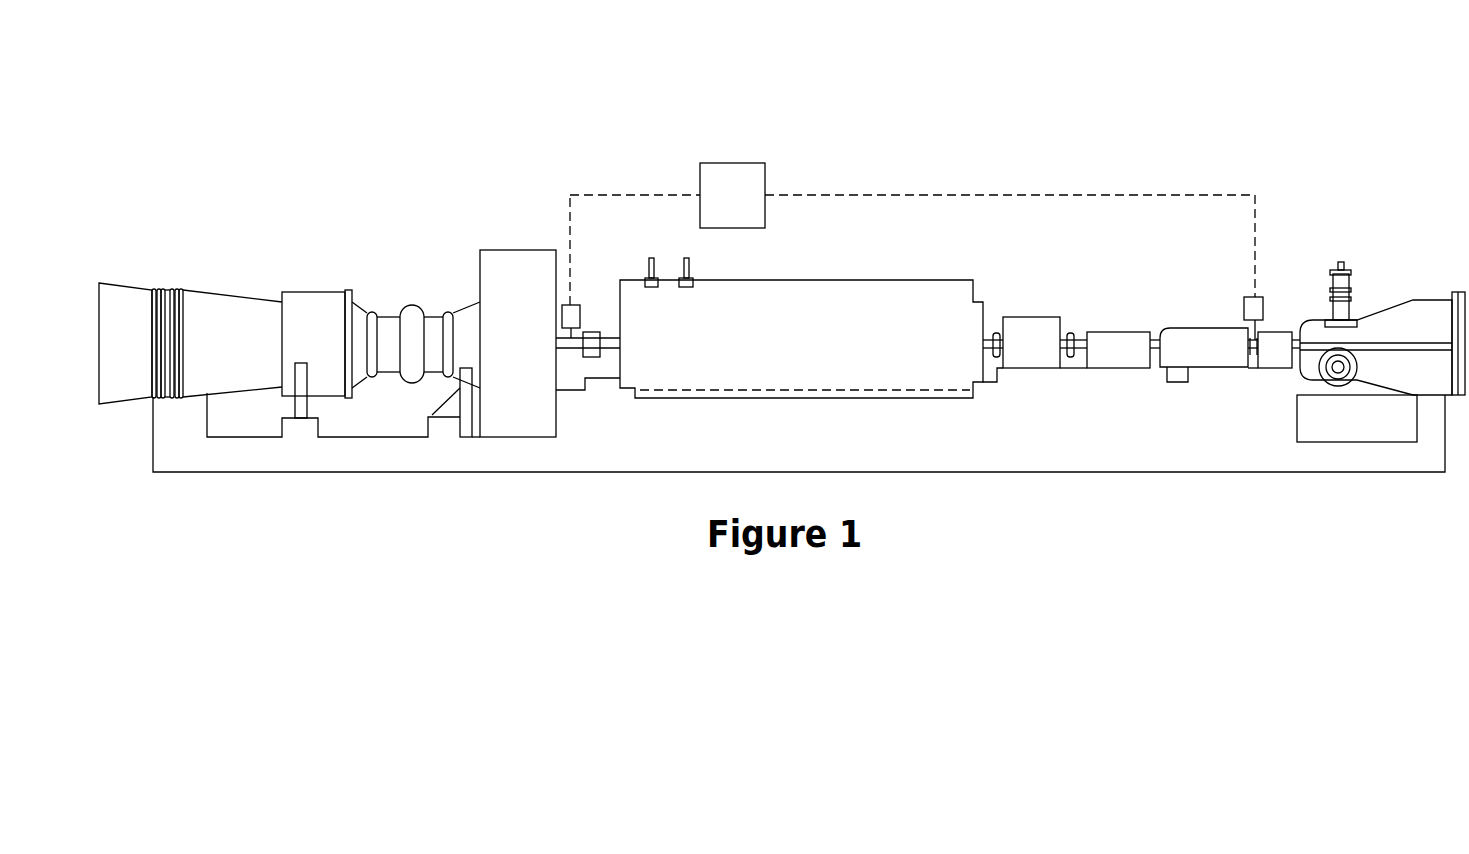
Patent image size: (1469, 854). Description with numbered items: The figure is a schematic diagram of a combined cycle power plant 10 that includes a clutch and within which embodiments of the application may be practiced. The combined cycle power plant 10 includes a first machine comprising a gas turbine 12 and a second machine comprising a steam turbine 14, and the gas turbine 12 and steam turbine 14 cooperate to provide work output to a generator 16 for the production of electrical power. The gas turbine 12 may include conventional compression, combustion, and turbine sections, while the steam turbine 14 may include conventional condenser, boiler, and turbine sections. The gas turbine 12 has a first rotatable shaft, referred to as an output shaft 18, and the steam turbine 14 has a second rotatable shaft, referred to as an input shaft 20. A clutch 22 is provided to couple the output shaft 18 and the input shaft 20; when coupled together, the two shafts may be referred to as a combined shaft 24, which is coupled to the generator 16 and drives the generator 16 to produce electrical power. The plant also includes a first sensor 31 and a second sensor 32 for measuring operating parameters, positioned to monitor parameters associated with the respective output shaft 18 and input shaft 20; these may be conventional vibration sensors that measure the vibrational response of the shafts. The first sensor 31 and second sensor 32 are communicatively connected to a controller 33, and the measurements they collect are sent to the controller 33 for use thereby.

The combined cycle power plant 10 is at (975, 78).
The gas turbine 12 is at (252, 278).
The steam turbine 14 is at (1398, 290).
The generator 16 is at (869, 268).
The output shaft 18 is at (568, 366).
The input shaft 20 is at (1250, 368).
The clutch 22 is at (1134, 318).
The combined shaft 24 is at (994, 325).
The first sensor 31 is at (580, 315).
The second sensor 32 is at (1263, 306).
The controller 33 is at (765, 180).